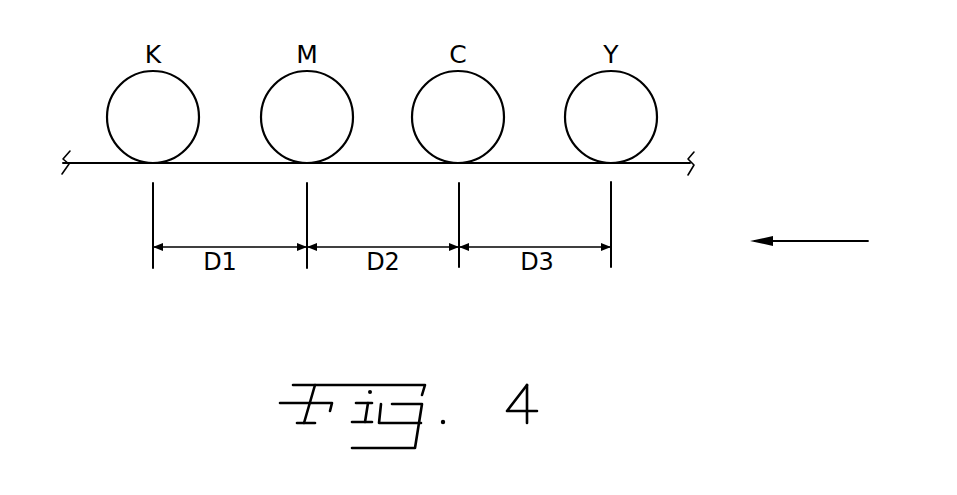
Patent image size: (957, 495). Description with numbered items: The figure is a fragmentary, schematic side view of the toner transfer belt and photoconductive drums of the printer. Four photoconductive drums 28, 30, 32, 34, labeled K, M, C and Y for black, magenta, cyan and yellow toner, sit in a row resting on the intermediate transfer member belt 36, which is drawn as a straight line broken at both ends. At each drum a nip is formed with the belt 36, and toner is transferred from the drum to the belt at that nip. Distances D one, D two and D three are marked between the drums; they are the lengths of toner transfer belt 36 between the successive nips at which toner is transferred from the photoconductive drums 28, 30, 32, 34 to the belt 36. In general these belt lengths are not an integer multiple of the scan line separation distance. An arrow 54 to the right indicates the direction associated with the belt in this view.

The photoconductive drum 28 is at (133, 133).
The photoconductive drum 30 is at (287, 133).
The photoconductive drum 32 is at (438, 133).
The photoconductive drum 34 is at (591, 133).
The intermediate transfer member belt 36 is at (92, 164).
The direction of belt travel 54 is at (810, 241).